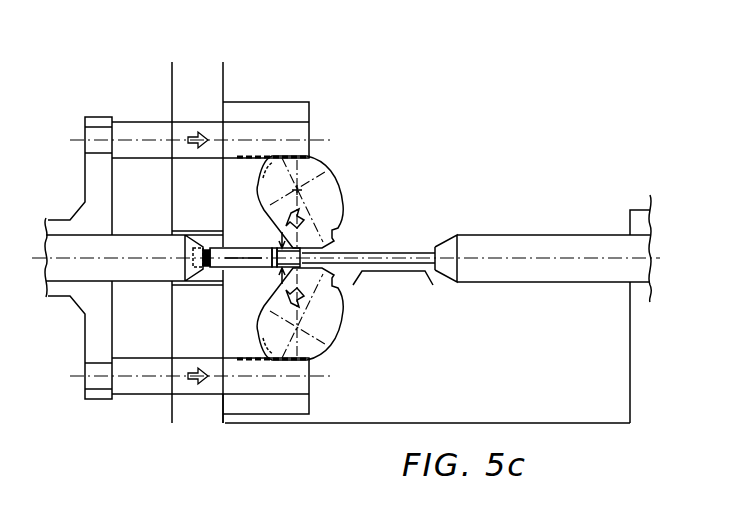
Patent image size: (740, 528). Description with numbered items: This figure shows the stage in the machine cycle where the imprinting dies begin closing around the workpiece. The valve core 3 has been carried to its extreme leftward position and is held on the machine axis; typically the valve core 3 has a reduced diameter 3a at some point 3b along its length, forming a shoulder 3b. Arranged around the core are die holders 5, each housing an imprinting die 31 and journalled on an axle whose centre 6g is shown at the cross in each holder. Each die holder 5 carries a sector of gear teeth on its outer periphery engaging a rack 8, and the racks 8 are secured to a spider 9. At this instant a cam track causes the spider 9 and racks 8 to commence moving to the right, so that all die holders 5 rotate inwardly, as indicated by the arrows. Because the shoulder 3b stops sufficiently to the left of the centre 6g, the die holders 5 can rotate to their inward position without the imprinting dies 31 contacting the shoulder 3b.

The valve core 3 is at (256, 247).
The reduced diameter 3a is at (272, 268).
The shoulder 3b is at (278, 276).
The die holder 5 is at (300, 188).
The centre of axles 6g is at (300, 190).
The rack 8 is at (265, 130).
The spider 9 is at (92, 178).
The imprinting die 31 is at (348, 257).